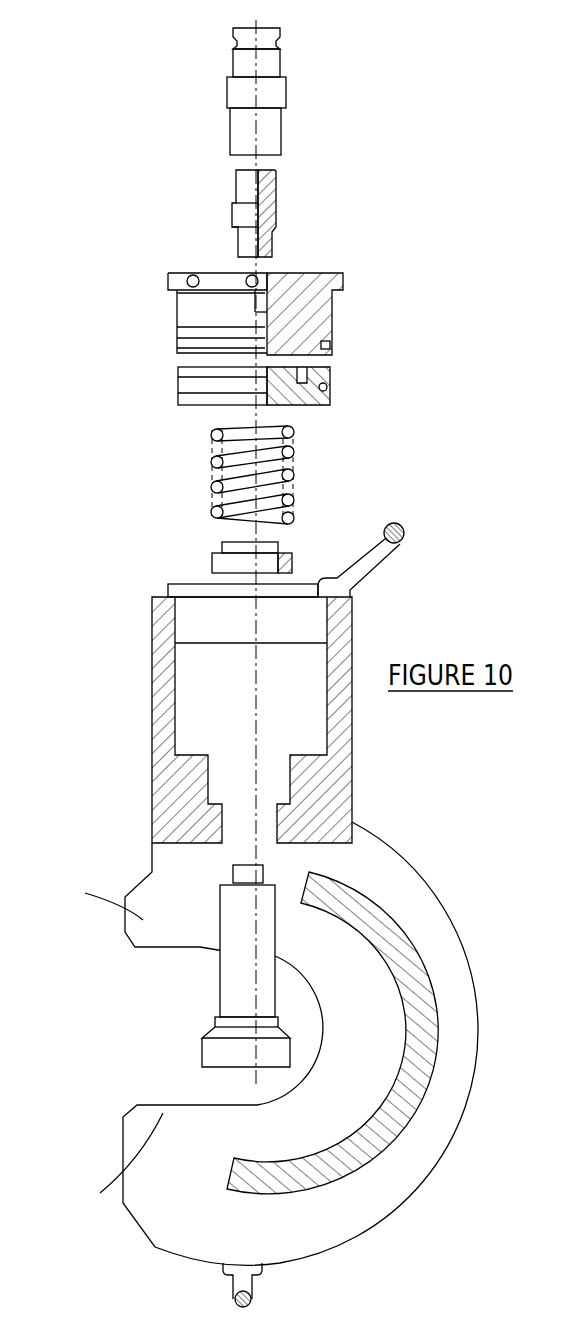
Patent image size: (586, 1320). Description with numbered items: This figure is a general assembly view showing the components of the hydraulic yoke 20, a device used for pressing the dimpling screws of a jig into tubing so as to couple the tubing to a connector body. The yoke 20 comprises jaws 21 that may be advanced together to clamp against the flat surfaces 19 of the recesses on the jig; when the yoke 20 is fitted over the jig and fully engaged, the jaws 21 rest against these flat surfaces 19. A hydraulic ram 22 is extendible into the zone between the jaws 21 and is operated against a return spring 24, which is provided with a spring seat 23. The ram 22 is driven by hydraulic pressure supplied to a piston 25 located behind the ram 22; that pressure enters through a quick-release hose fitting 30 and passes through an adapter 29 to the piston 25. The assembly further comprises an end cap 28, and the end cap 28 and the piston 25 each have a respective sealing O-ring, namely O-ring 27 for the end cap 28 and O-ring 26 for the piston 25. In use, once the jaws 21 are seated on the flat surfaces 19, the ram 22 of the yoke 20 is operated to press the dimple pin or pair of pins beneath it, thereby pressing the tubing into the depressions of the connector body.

The flat surfaces 19 is at (110, 896).
The hydraulic yoke 20 is at (442, 974).
The jaws 21 is at (109, 1045).
The hydraulic ram 22 is at (230, 982).
The spring seat 23 is at (213, 562).
The return spring 24 is at (210, 460).
The piston 25 is at (287, 387).
The sealing O-ring 26 is at (180, 387).
The sealing O-ring 27 is at (332, 345).
The end cap 28 is at (193, 310).
The adapter 29 is at (273, 214).
The quick-release hose fitting 30 is at (272, 100).